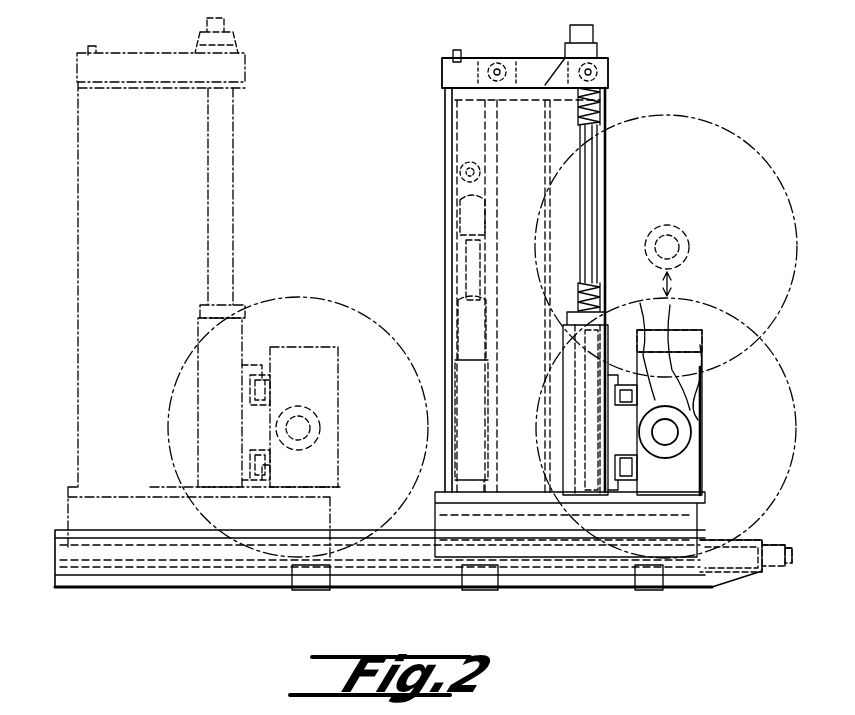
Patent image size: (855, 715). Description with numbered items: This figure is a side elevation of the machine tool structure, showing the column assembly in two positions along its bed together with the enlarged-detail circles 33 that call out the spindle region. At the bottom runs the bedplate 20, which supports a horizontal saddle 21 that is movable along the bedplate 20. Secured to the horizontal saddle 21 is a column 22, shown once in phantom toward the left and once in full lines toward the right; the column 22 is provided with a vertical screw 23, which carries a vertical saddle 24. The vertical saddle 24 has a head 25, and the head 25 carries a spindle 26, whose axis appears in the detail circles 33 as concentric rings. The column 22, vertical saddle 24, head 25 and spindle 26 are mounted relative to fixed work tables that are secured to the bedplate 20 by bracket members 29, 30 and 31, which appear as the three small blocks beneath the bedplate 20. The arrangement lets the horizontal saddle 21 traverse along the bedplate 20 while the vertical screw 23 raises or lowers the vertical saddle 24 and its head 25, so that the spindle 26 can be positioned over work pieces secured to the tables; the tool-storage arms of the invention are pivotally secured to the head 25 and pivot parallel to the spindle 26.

The bedplate 20 is at (215, 590).
The horizontal saddle 21 is at (417, 508).
The column 22 is at (78, 135).
The vertical screw 23 is at (600, 112).
The vertical saddle 24 is at (200, 332).
The head 25 is at (340, 393).
The spindle 26 is at (320, 435).
The bracket member 29 is at (310, 582).
The bracket member 30 is at (481, 585).
The bracket member 31 is at (648, 585).
The enlargement circle 33 is at (318, 297).